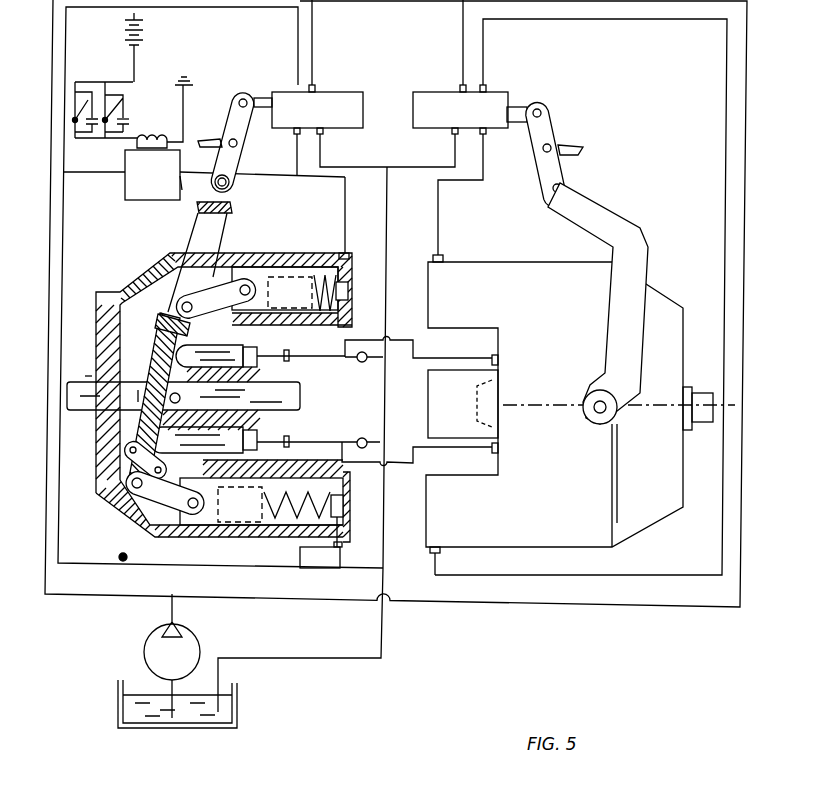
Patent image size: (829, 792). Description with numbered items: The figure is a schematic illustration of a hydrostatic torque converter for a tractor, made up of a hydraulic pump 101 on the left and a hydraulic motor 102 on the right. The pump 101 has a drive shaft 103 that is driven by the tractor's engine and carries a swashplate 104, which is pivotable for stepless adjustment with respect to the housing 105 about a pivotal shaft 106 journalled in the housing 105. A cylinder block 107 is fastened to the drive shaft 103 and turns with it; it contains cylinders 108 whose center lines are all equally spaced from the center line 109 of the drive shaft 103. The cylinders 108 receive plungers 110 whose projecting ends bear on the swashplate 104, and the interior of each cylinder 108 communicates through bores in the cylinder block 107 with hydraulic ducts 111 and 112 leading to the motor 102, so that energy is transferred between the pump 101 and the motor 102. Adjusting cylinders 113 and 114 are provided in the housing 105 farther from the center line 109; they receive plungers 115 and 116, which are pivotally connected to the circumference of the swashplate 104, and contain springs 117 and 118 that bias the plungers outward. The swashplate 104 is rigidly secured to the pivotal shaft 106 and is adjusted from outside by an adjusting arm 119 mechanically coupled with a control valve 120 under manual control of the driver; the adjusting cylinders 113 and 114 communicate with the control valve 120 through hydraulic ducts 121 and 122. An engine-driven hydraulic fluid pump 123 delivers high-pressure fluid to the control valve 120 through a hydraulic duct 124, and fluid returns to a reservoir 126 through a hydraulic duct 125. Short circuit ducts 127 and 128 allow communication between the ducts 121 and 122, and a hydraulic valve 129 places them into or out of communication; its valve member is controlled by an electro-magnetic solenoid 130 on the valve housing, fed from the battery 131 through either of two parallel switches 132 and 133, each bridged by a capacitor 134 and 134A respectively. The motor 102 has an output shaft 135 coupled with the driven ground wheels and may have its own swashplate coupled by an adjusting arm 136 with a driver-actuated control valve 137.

The hydraulic pump 101 is at (130, 273).
The hydraulic motor 102 is at (673, 304).
The drive shaft 103 is at (88, 376).
The swashplate 104 is at (161, 325).
The housing 105 is at (131, 517).
The pivotal shaft 106 is at (150, 396).
The cylinder block 107 is at (292, 367).
The cylinders 108 is at (273, 353).
The center line 109 is at (308, 401).
The plungers 110 is at (232, 340).
The hydraulic duct 111 is at (396, 342).
The hydraulic duct 112 is at (390, 466).
The adjusting cylinder 113 is at (326, 268).
The adjusting cylinder 114 is at (276, 539).
The plunger 115 is at (264, 264).
The plunger 116 is at (190, 534).
The spring 117 is at (339, 293).
The spring 118 is at (296, 540).
The adjusting arm 119 is at (229, 225).
The control valve 120 is at (333, 97).
The hydraulic duct 121 is at (344, 195).
The hydraulic duct 122 is at (84, 564).
The hydraulic fluid pump 123 is at (197, 639).
The hydraulic duct 124 is at (61, 595).
The hydraulic duct 125 is at (378, 658).
The reservoir 126 is at (238, 712).
The short circuit duct 127 is at (77, 176).
The short circuit duct 128 is at (190, 176).
The hydraulic valve 129 is at (131, 201).
The electro-magnetic solenoid 130 is at (165, 135).
The battery 131 is at (146, 34).
The switch 132 is at (73, 120).
The switch 133 is at (126, 102).
The capacitor 134 is at (75, 138).
The capacitor 134A is at (127, 122).
The output shaft 135 is at (697, 396).
The adjusting arm 136 is at (615, 328).
The control valve 137 is at (498, 99).